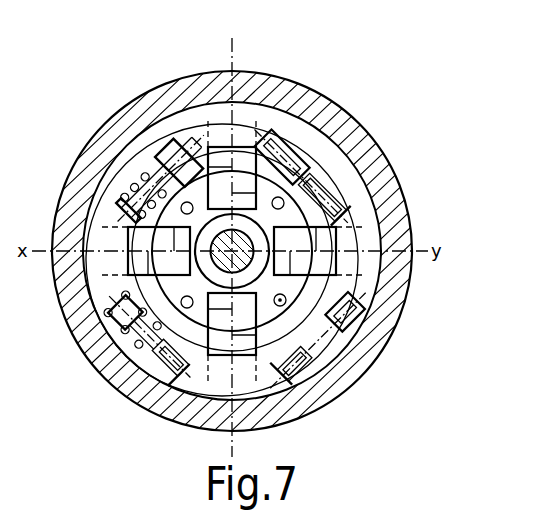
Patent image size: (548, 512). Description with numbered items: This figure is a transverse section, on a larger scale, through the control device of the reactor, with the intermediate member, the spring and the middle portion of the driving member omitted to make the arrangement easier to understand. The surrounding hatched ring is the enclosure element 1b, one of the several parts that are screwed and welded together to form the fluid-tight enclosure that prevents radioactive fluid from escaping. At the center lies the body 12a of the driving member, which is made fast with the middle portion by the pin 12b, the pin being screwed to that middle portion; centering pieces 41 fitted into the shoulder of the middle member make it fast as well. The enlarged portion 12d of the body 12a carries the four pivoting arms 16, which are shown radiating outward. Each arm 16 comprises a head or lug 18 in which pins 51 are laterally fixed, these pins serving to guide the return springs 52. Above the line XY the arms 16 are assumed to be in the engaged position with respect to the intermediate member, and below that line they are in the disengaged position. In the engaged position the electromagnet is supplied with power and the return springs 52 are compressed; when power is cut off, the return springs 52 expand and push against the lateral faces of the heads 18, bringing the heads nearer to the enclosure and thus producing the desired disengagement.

The enclosure element 1b is at (398, 238).
The body of the driving member 12a is at (250, 223).
The pin 12b is at (263, 248).
The enlarged portion 12d is at (293, 290).
The pivoting arms 16 is at (220, 173).
The heads or lugs 18 is at (262, 150).
The centering pieces 41 is at (282, 302).
The pins 51 is at (163, 160).
The return springs 52 is at (130, 178).